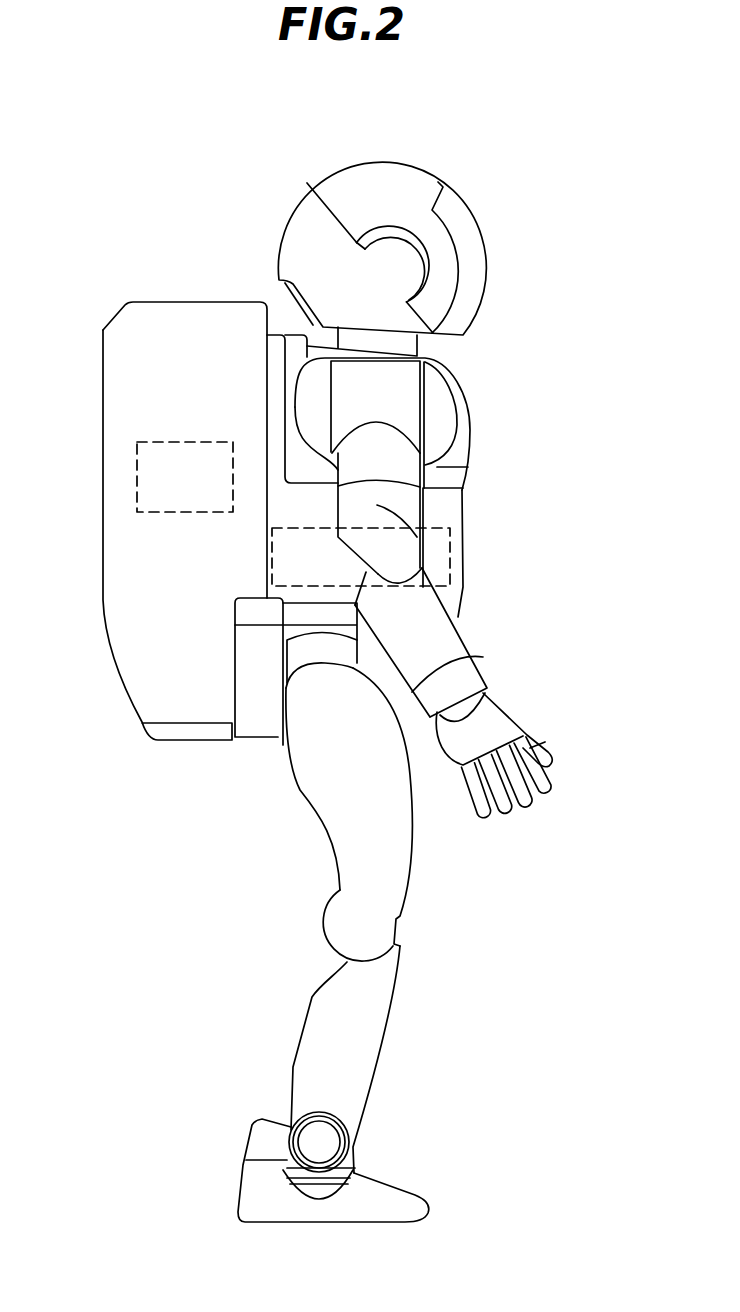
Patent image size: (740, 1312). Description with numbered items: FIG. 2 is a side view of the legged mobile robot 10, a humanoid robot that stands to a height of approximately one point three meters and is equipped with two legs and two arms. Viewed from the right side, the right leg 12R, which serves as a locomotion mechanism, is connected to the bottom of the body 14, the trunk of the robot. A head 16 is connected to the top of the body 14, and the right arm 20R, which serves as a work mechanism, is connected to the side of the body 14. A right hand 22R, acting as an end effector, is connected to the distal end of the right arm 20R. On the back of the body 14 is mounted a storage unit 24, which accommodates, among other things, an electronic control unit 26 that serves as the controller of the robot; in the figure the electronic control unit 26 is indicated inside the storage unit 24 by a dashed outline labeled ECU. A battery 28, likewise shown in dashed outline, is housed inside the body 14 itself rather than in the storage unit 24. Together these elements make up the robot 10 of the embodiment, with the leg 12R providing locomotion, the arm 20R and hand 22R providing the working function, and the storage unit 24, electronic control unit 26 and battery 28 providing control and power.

The legged mobile robot 10 is at (480, 385).
The right leg 12R is at (430, 960).
The body 14 is at (452, 495).
The head 16 is at (350, 165).
The right arm 20R is at (488, 632).
The right hand 22R is at (502, 723).
The storage unit 24 is at (172, 301).
The electronic control unit 26 is at (135, 482).
The battery 28 is at (280, 527).